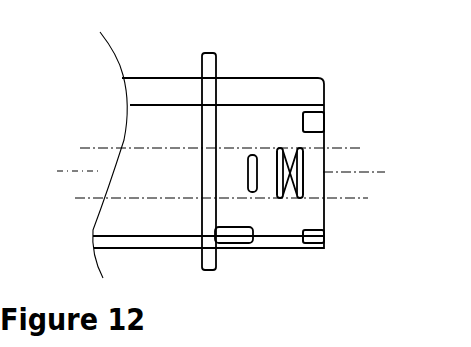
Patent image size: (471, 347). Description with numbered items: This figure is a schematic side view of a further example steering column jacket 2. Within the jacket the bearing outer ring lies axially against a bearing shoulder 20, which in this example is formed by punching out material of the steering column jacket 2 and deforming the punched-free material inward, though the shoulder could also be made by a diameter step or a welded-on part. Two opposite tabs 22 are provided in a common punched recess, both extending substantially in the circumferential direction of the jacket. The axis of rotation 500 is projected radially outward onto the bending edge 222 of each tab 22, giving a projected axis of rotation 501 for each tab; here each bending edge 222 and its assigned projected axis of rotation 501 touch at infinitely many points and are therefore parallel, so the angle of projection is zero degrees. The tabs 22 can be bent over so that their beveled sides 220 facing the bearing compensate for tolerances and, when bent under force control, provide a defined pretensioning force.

The steering column jacket 2 is at (162, 92).
The bearing shoulder 20 is at (248, 173).
The tab 22 is at (300, 148).
The side 220 is at (277, 162).
The bending edge 222 is at (290, 148).
The axis of rotation 500 is at (360, 173).
The projected axis of rotation 501 is at (338, 150).